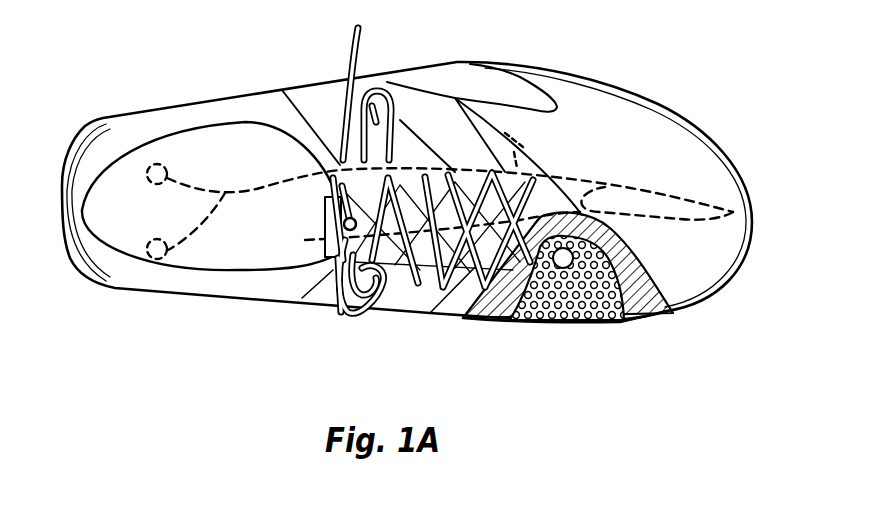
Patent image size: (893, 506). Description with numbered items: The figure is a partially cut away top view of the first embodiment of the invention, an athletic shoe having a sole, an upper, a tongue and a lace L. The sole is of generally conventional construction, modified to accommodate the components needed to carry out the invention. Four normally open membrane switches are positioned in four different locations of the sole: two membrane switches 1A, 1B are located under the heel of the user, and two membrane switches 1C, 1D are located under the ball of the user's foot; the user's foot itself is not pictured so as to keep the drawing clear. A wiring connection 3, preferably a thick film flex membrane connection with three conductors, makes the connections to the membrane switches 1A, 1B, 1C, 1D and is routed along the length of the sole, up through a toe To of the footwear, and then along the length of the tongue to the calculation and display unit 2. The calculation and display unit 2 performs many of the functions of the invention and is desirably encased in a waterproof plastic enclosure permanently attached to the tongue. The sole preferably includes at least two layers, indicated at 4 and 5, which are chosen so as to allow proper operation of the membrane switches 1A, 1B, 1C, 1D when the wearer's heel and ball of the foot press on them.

The membrane switch 1A is at (163, 167).
The membrane switch 1B is at (140, 246).
The membrane switch 1C is at (520, 131).
The membrane switch 1D is at (545, 321).
The calculation and display unit 2 is at (330, 242).
The wiring connection 3 is at (708, 203).
The sole layer 4 is at (600, 322).
The sole layer 5 is at (667, 307).
The lace L is at (392, 88).
The toe To is at (746, 208).